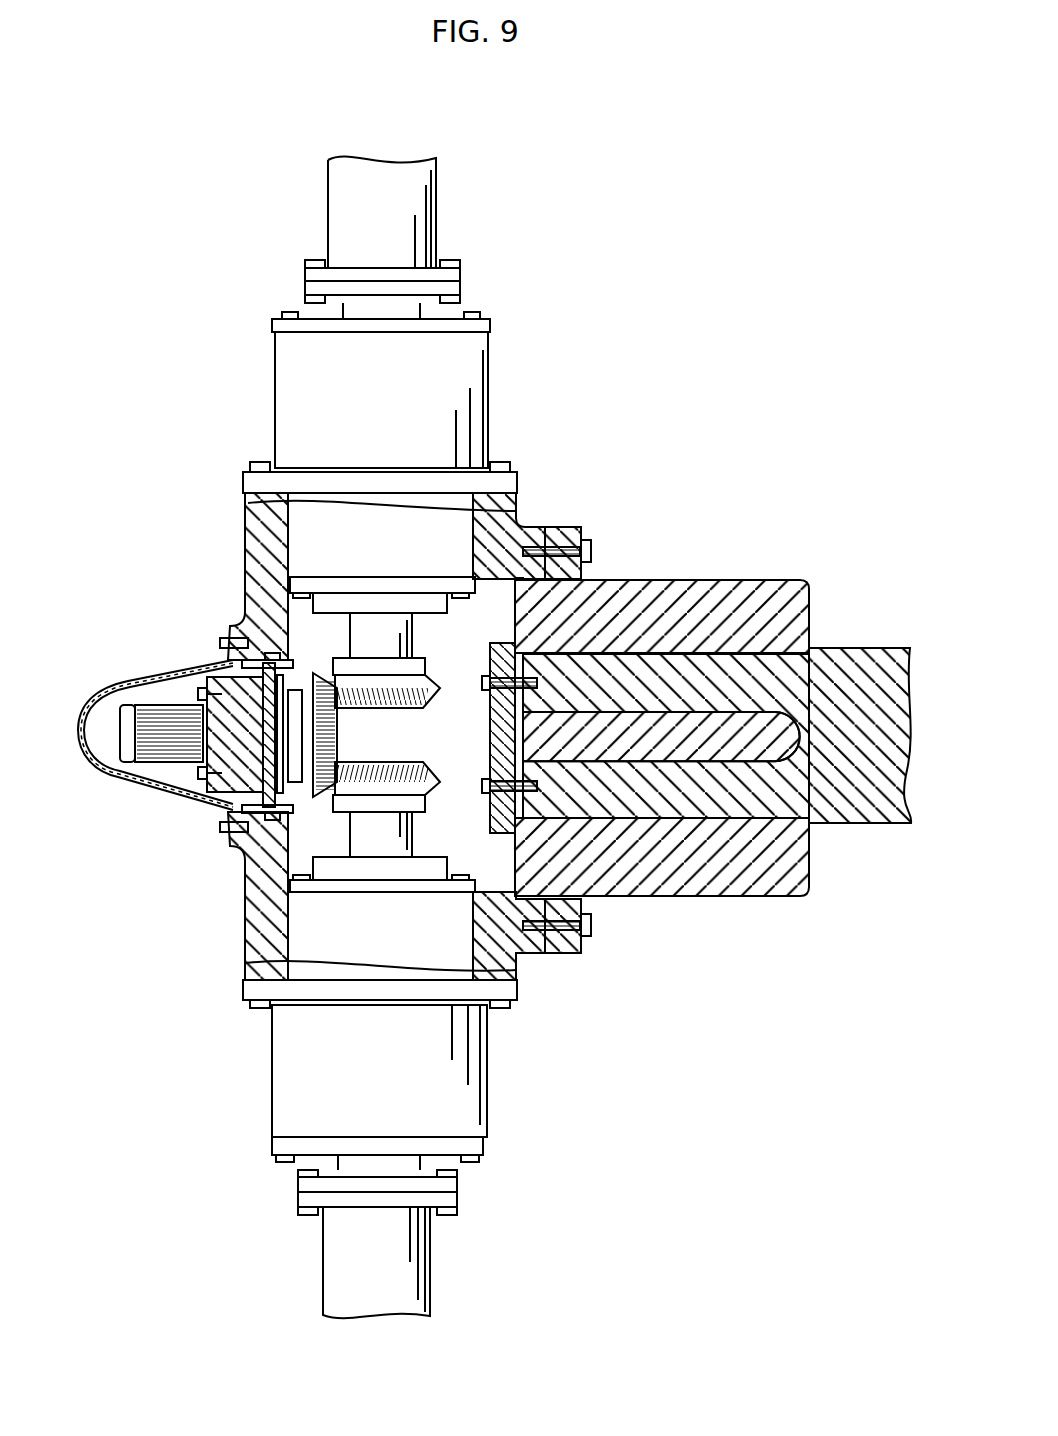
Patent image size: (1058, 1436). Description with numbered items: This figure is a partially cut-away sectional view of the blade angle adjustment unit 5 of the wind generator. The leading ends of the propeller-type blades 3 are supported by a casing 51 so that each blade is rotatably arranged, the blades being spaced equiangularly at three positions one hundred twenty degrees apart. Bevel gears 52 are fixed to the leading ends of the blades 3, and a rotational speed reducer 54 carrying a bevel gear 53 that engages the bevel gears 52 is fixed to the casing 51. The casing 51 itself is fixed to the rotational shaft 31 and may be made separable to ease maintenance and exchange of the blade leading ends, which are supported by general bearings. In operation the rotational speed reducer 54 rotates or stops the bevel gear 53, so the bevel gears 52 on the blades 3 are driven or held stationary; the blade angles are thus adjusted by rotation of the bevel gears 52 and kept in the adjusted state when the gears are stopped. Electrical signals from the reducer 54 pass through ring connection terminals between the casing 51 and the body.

The propeller-type blades 3 is at (428, 232).
The blade angle adjustment unit 5 is at (203, 819).
The rotational shaft 31 is at (862, 815).
The casing 51 is at (256, 928).
The bevel gears 52 is at (445, 788).
The bevel gear 53 is at (312, 680).
The rotational speed reducer 54 is at (188, 737).